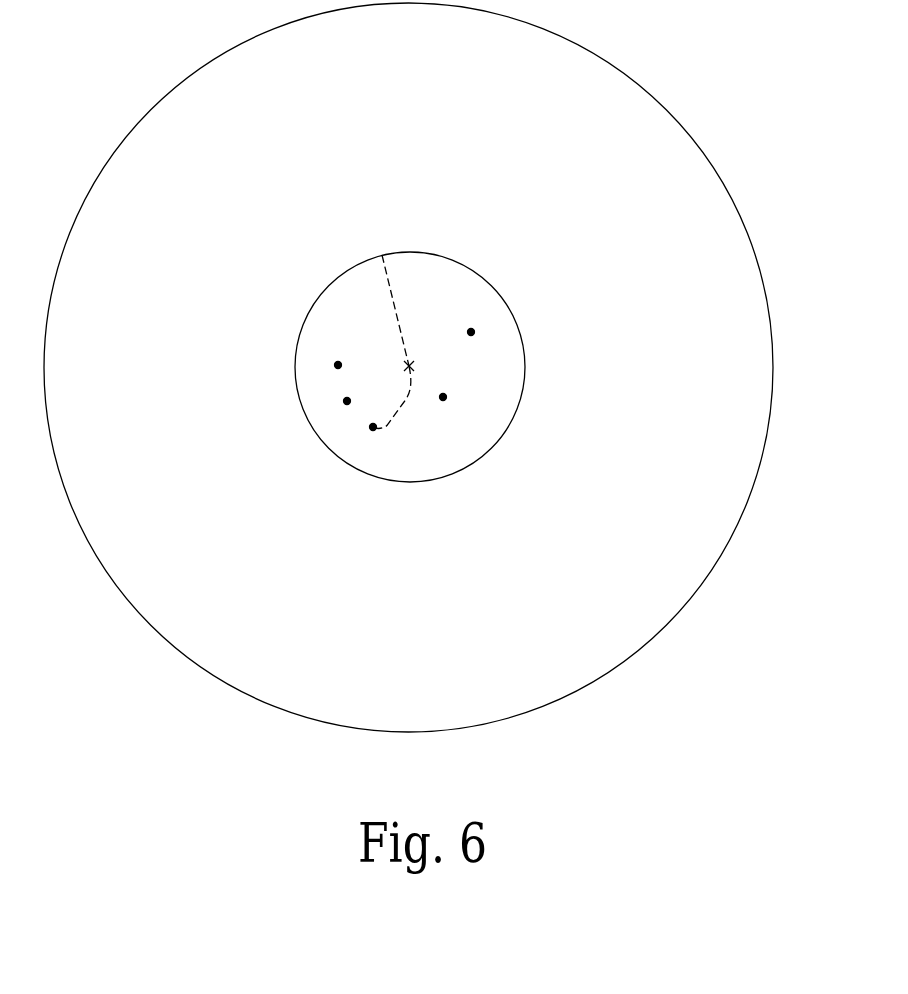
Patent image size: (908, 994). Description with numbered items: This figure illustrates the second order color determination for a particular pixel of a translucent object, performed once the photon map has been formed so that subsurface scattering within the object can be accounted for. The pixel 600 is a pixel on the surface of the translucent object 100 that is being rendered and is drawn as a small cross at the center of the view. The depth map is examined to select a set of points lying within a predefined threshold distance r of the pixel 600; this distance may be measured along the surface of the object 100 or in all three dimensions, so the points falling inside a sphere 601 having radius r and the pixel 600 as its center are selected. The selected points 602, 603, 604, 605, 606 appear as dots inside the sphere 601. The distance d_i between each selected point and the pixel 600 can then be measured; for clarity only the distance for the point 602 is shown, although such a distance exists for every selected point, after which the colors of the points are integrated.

The translucent object 100 is at (772, 411).
The pixel 600 is at (414, 366).
The sphere 601 is at (497, 286).
The selected point 602 is at (373, 429).
The selected point 603 is at (347, 401).
The selected point 604 is at (338, 365).
The selected point 605 is at (443, 398).
The selected point 606 is at (471, 332).